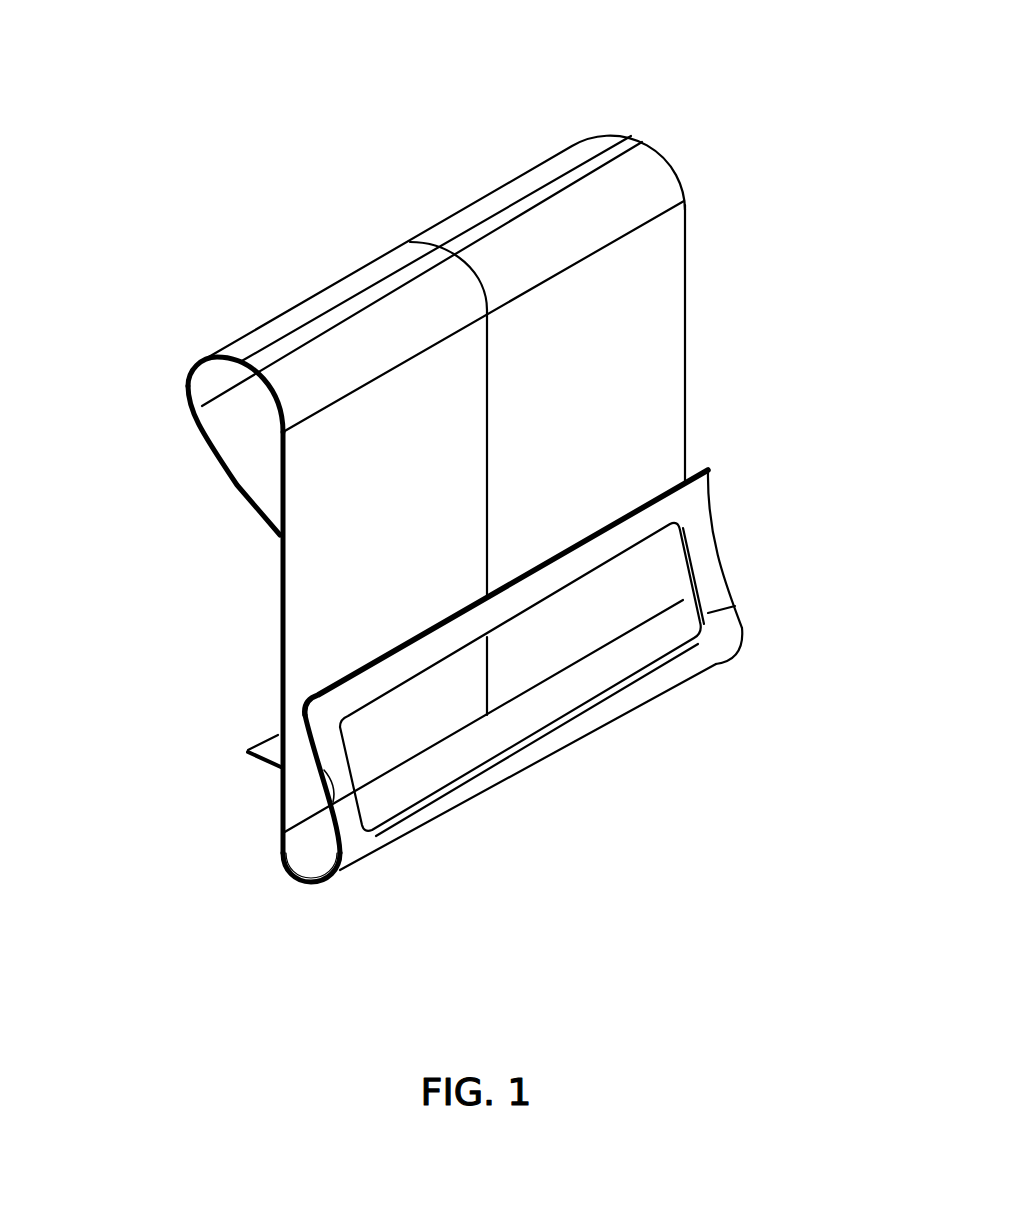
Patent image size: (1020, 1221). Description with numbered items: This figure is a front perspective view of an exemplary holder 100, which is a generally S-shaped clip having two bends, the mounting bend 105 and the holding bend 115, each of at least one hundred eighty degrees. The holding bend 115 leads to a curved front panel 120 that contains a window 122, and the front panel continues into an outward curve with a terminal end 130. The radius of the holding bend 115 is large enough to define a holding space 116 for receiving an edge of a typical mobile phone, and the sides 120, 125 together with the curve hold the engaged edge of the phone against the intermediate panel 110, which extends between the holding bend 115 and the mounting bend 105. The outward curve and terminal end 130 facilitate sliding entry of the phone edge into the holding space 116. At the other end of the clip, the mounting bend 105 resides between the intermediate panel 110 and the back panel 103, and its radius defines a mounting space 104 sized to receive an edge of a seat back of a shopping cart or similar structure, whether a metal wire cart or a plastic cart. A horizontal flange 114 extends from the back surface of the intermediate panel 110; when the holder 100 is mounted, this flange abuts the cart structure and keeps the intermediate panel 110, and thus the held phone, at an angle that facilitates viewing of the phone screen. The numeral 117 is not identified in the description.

The holder 100 is at (355, 262).
The back panel 103 is at (239, 410).
The mounting space 104 is at (240, 412).
The mounting bend 105 is at (574, 173).
The intermediate panel 110 is at (630, 277).
The horizontal flange 114 is at (250, 737).
The holding bend 115 is at (438, 832).
The holding space 116 is at (311, 885).
The return arm 117 is at (276, 806).
The front panel 120 is at (320, 853).
The window 122 is at (613, 623).
The side 125 is at (707, 558).
The terminal end 130 is at (335, 683).